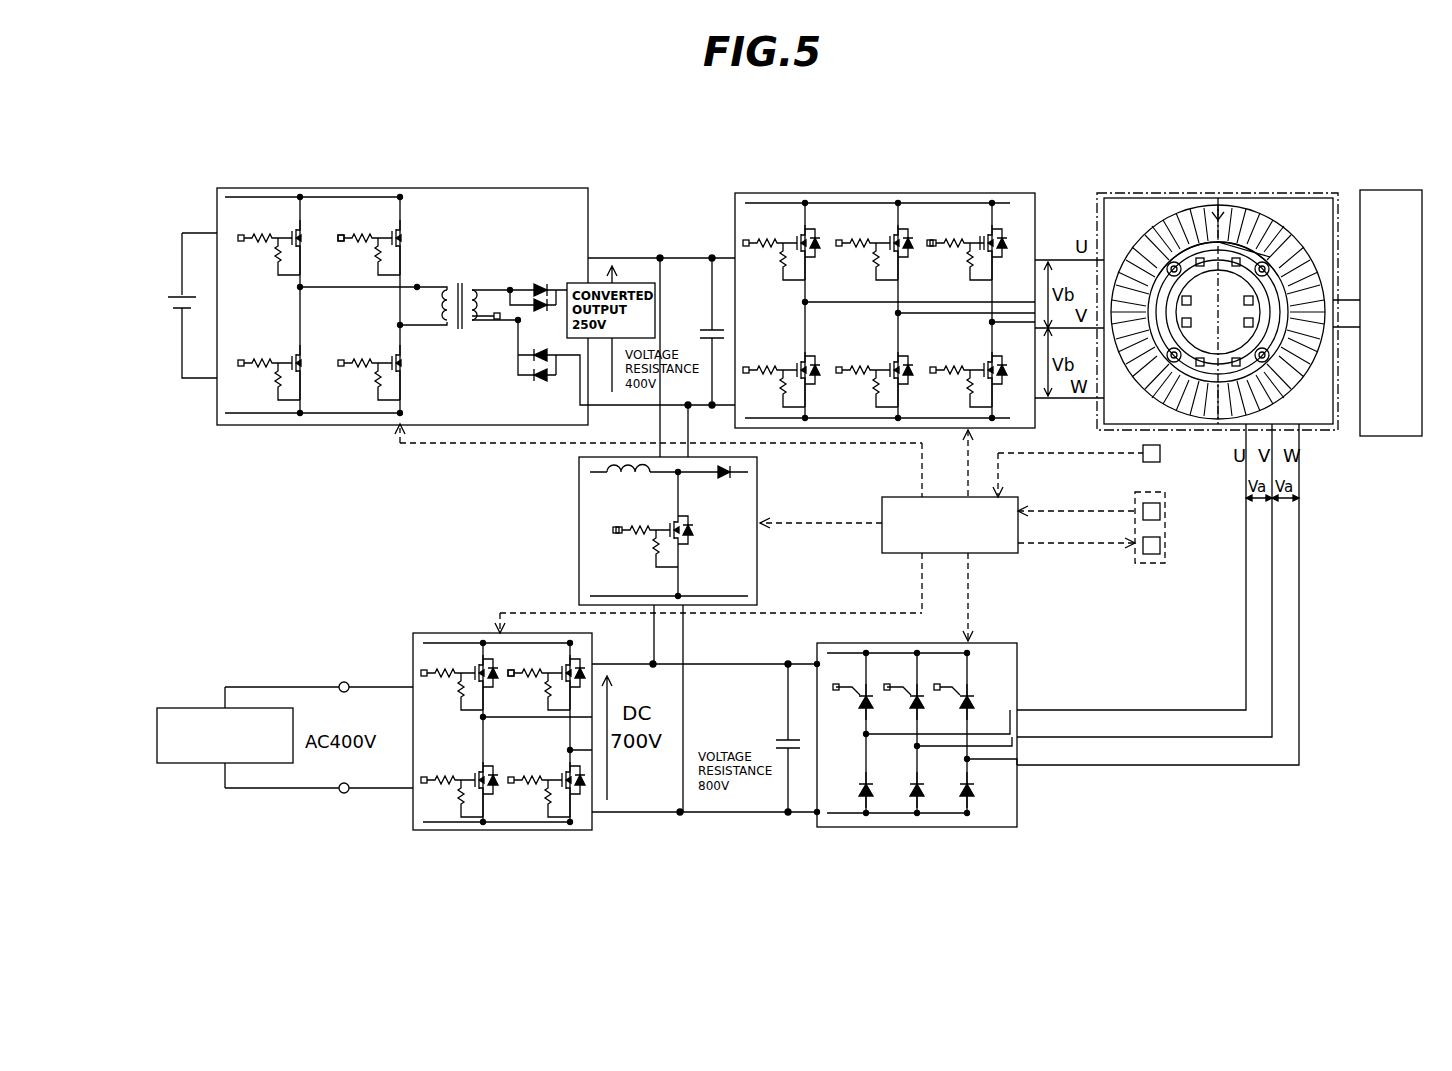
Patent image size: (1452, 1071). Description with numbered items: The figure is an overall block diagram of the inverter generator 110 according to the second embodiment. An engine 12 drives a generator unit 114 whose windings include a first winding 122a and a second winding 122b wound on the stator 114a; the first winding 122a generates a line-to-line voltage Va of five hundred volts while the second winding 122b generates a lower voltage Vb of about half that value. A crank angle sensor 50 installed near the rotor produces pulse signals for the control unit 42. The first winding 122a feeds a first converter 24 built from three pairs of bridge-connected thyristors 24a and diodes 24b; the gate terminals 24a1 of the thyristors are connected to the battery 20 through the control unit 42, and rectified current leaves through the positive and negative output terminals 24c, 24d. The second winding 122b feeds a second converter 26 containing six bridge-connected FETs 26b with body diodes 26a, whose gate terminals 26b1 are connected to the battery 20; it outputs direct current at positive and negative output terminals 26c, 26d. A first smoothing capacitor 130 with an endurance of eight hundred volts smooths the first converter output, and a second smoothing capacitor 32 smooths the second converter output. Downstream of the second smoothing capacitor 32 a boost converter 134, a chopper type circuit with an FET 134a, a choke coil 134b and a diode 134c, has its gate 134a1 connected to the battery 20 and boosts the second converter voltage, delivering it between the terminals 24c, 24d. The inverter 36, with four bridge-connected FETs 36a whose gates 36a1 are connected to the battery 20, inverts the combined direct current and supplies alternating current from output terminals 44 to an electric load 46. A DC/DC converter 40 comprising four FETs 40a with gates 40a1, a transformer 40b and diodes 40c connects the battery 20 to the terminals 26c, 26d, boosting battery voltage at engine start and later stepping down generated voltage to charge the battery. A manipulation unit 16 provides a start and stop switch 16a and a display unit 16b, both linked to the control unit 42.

The engine 12 is at (1390, 190).
The manipulation unit 16 is at (1178, 518).
The start and stop switch 16a is at (1160, 511).
The display unit 16b is at (1160, 545).
The battery 20 is at (178, 295).
The first converter 24 is at (917, 711).
The thyristor 24a is at (972, 698).
The gate terminal 24a1 is at (938, 682).
The diode 24b is at (975, 784).
The positive output terminal 24c is at (817, 664).
The negative output terminal 24d is at (812, 812).
The second converter 26 is at (885, 286).
The body diode 26a is at (1000, 243).
The FET 26b is at (978, 235).
The gate terminal 26b1 is at (931, 248).
The positive output terminal 26c is at (734, 258).
The negative output terminal 26d is at (735, 405).
The second smoothing capacitor 32 is at (710, 333).
The inverter 36 is at (502, 707).
The FET 36a is at (561, 664).
The gate 36a1 is at (522, 676).
The DC/DC converter 40 is at (402, 288).
The FET 40a is at (394, 230).
The gate 40a1 is at (340, 242).
The transformer 40b is at (464, 286).
The diode 40c is at (540, 285).
The control unit 42 is at (1012, 506).
The output terminal 44 is at (345, 682).
The electric load 46 is at (200, 708).
The crank angle sensor 50 is at (1160, 453).
The inverter generator 110 is at (1221, 259).
The generator unit 114 is at (1218, 254).
The stator 114a is at (1246, 198).
The first winding 122a is at (1288, 238).
The second winding 122b is at (1127, 257).
The first smoothing capacitor 130 is at (786, 740).
The boost converter 134 is at (654, 531).
The FET 134a is at (663, 530).
The gate 134a1 is at (613, 535).
The choke coil 134b is at (607, 474).
The diode 134c is at (726, 480).